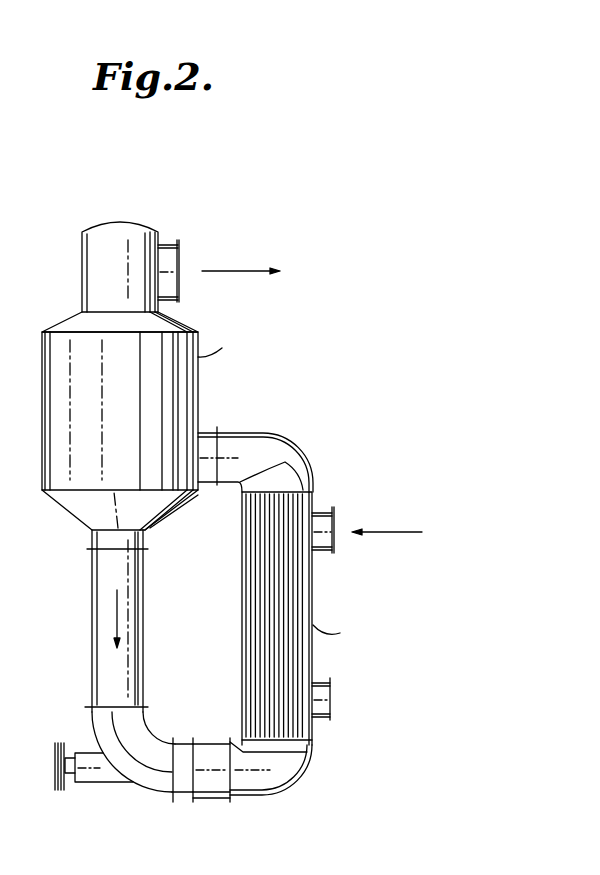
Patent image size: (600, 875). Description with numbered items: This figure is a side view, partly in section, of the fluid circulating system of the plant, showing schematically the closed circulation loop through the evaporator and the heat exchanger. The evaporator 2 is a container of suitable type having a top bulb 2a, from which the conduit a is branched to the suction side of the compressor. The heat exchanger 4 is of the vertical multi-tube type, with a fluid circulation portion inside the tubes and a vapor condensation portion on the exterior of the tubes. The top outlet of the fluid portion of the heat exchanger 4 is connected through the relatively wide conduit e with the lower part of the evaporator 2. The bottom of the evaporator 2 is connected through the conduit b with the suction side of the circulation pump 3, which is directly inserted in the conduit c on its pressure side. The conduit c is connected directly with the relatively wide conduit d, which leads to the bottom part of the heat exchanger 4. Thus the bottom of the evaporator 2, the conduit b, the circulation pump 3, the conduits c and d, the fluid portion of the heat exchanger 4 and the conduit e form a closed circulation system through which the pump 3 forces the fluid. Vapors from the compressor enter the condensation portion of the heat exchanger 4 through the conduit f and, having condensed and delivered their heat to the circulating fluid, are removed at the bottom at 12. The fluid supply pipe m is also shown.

The evaporator 2 is at (200, 384).
The top bulb 2a is at (82, 272).
The conduit a is at (178, 262).
The conduit e is at (272, 446).
The heat exchanger 4 is at (302, 594).
The conduit f is at (335, 520).
The condensate outlet 12 is at (323, 710).
The conduit b is at (95, 650).
The fluid supply pipe m is at (97, 783).
The circulation pump 3 is at (182, 798).
The conduit c is at (205, 795).
The conduit d is at (282, 790).